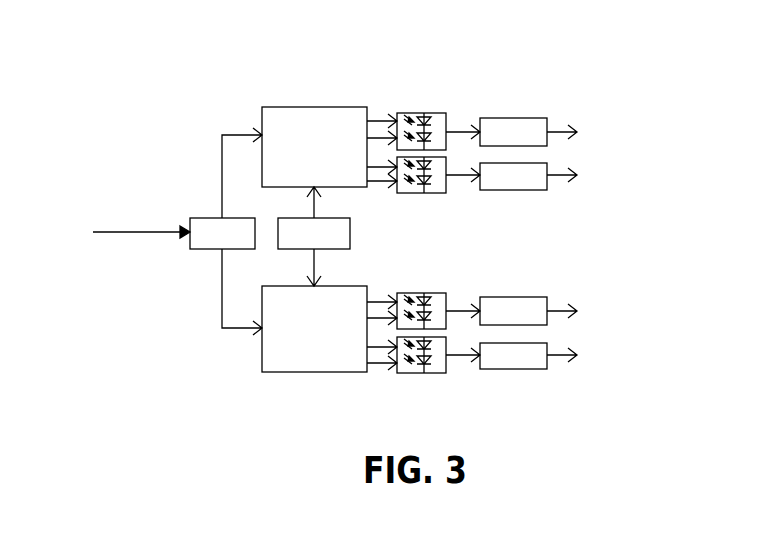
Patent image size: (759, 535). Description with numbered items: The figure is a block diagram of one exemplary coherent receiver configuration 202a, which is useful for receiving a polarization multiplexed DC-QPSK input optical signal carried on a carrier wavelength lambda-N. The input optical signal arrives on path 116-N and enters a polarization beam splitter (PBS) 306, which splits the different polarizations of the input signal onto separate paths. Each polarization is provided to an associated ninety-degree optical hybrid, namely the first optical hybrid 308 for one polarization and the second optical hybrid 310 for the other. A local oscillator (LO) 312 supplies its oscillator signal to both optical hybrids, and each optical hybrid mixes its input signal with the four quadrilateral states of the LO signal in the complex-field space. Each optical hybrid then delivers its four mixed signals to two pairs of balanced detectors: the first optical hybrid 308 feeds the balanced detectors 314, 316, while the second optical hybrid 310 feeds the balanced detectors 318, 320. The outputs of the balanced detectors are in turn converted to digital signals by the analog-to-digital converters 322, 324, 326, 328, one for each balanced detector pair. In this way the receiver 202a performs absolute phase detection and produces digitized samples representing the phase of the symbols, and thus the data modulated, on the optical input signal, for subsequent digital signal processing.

The coherent receiver configuration 202a is at (640, 131).
The path 116-N is at (135, 232).
The polarization beam splitter 306 is at (207, 218).
The first 90° optical hybrid 308 is at (262, 107).
The second 90° optical hybrid 310 is at (262, 372).
The local oscillator 312 is at (350, 236).
The balanced detector 314 is at (418, 113).
The balanced detector 316 is at (425, 193).
The balanced detector 318 is at (418, 293).
The balanced detector 320 is at (420, 373).
The analog-to-digital converter 322 is at (510, 118).
The analog-to-digital converter 324 is at (500, 190).
The analog-to-digital converter 326 is at (510, 297).
The analog-to-digital converter 328 is at (510, 369).